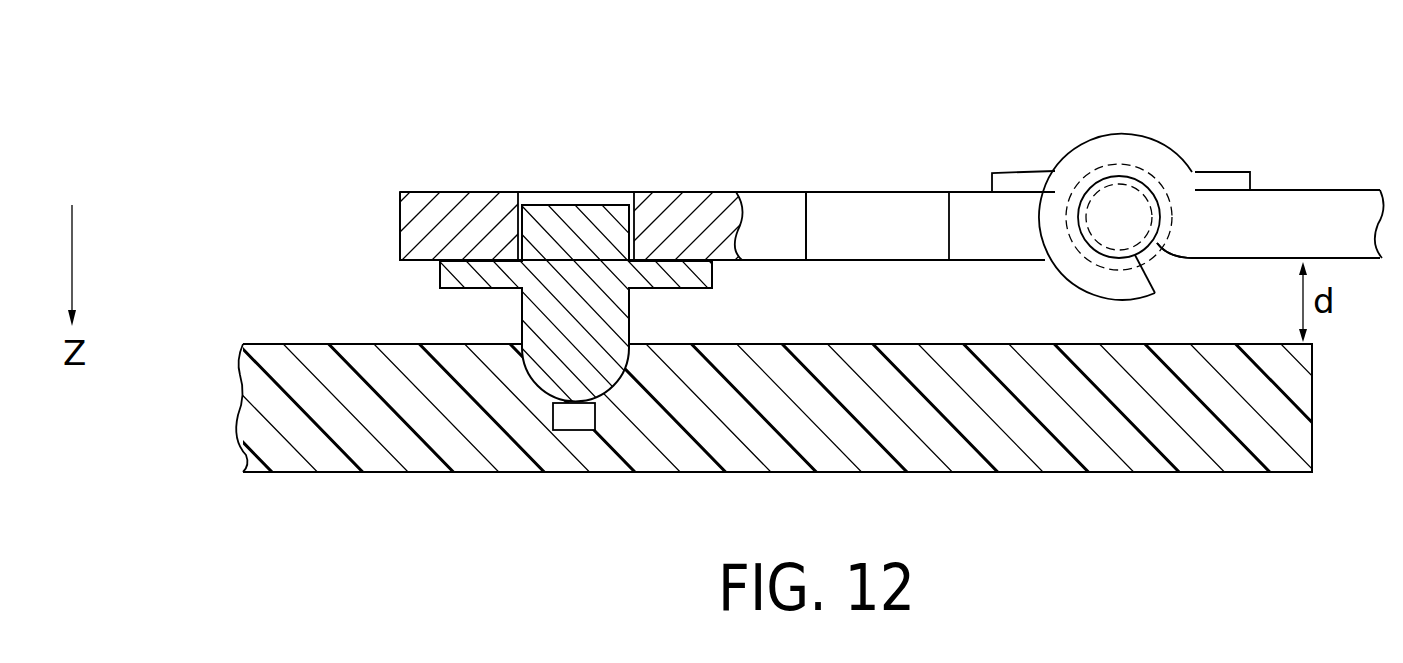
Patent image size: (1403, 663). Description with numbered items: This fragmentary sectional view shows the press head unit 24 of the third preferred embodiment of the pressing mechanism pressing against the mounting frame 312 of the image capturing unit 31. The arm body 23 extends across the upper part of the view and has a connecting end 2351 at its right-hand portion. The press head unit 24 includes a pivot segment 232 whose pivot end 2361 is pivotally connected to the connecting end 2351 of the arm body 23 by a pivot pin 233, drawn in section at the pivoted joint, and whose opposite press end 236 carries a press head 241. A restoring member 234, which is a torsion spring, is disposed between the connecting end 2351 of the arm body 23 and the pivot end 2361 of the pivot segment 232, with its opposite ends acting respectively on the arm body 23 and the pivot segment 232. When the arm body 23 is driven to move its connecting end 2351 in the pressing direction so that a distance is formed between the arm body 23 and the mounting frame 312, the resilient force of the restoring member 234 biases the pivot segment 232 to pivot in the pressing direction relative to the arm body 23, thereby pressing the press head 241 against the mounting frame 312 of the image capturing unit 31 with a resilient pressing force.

The arm body 23 is at (1283, 190).
The pivot segment 232 is at (778, 192).
The pivot pin 233 is at (1117, 208).
The restoring member 234 is at (1232, 177).
The connecting end 2351 is at (1213, 208).
The press end 236 is at (422, 192).
The pivot end 2361 is at (1027, 208).
The press head unit 24 is at (663, 160).
The press head 241 is at (521, 320).
The image capturing unit 31 is at (297, 493).
The mounting frame 312 is at (273, 344).